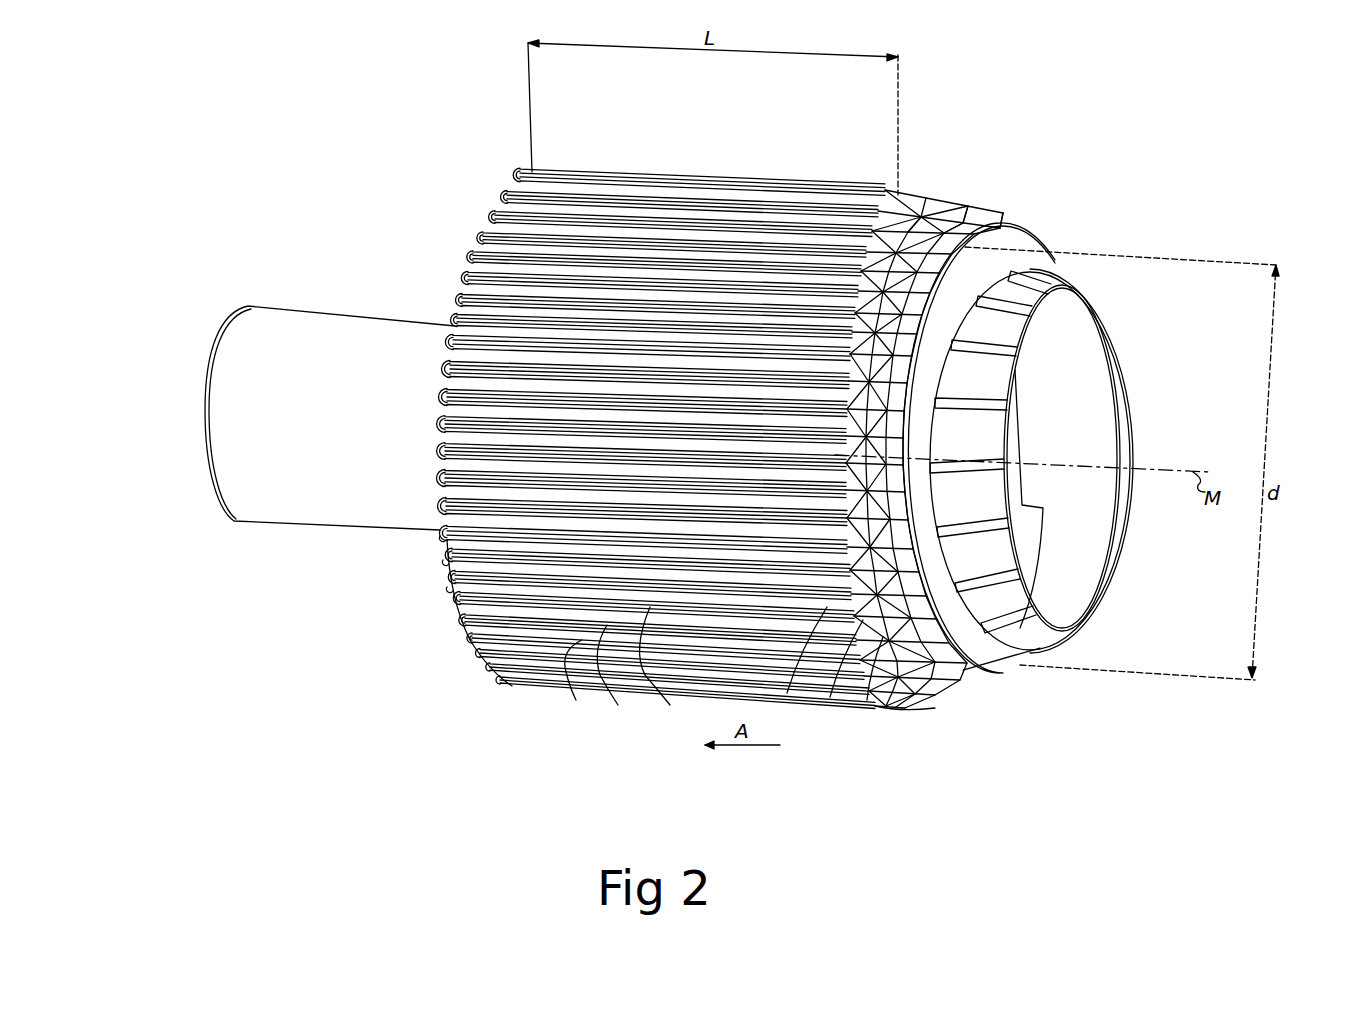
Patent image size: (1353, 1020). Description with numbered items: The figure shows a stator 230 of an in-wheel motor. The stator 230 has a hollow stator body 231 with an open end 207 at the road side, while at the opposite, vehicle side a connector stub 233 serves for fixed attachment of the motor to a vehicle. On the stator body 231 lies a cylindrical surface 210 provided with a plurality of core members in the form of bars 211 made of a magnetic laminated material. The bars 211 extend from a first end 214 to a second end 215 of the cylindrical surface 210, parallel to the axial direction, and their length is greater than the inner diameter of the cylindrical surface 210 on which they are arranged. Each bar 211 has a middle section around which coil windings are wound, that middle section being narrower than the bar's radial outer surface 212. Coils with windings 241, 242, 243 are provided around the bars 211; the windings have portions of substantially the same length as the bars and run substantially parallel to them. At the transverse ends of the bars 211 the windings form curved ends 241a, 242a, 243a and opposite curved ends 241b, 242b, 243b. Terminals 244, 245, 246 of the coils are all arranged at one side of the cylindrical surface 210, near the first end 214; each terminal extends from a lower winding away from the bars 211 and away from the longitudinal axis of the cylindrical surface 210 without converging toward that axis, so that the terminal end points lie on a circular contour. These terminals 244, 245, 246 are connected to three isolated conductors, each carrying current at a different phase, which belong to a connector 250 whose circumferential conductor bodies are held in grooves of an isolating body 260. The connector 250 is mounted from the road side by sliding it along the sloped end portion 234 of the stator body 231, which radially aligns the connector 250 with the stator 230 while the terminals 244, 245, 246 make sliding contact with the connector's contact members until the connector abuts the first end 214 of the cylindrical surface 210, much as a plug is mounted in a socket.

The open end 207 is at (1150, 452).
The cylindrical surface 210 is at (622, 426).
The bars 211 is at (470, 259).
The radial outer surface 212 is at (505, 198).
The first end 214 is at (897, 707).
The second end 215 is at (507, 683).
The stator 230 is at (1032, 423).
The stator body 231 is at (1068, 590).
The connector stub 233 is at (290, 525).
The sloped end portion 234 is at (1027, 663).
The winding 241 is at (670, 705).
The winding 242 is at (618, 705).
The winding 243 is at (576, 700).
The curved end 241a is at (797, 700).
The curved end 242a is at (822, 705).
The curved end 243a is at (855, 700).
The opposite curved end 241b is at (440, 536).
The opposite curved end 242b is at (443, 560).
The opposite curved end 243b is at (447, 587).
The terminal 244 is at (960, 197).
The terminal 245 is at (950, 200).
The terminal 246 is at (925, 195).
The connector 250 is at (952, 381).
The isolating body 260 is at (1003, 210).